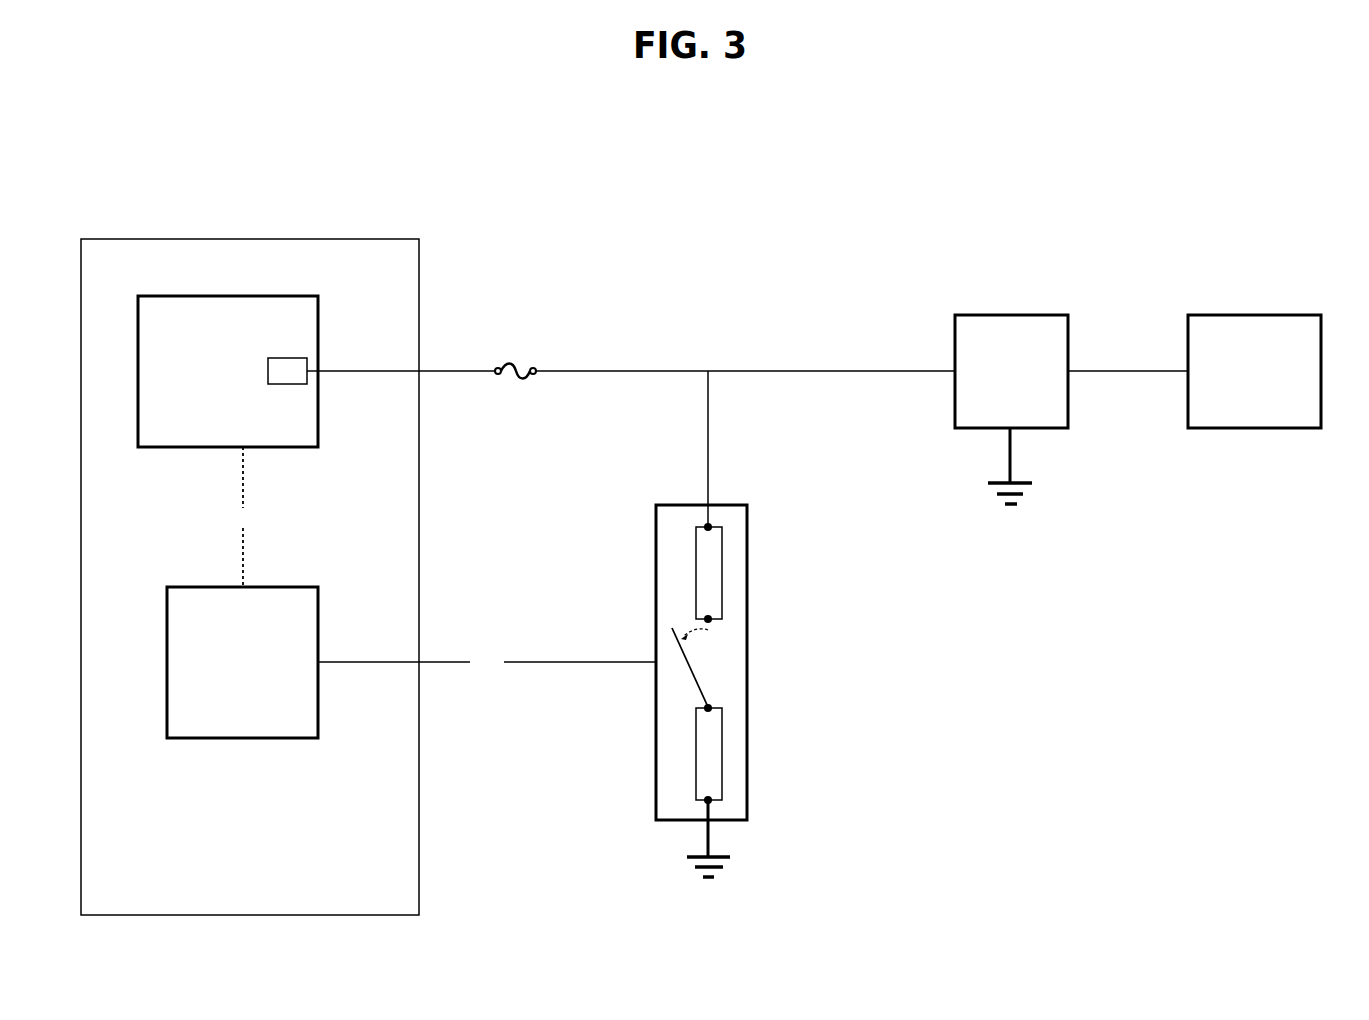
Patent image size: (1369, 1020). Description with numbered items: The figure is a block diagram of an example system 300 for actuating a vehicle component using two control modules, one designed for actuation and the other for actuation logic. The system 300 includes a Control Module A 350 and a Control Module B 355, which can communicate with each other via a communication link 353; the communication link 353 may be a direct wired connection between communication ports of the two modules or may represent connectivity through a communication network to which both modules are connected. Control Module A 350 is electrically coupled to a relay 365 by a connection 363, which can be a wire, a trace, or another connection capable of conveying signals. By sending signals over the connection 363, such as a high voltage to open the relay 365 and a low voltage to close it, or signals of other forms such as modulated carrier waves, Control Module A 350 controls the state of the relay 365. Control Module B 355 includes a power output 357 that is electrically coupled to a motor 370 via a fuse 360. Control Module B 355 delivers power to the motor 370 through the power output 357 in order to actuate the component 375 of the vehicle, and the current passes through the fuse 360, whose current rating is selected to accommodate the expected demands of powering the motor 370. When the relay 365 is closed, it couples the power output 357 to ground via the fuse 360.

The system 300 is at (319, 227).
The Control Module A 350 is at (223, 699).
The communication link 353 is at (227, 526).
The Control Module B 355 is at (226, 407).
The power output 357 is at (273, 380).
The fuse 360 is at (498, 436).
The connection 363 is at (472, 673).
The relay 365 is at (655, 718).
The motor 370 is at (993, 397).
The component 375 is at (1236, 397).